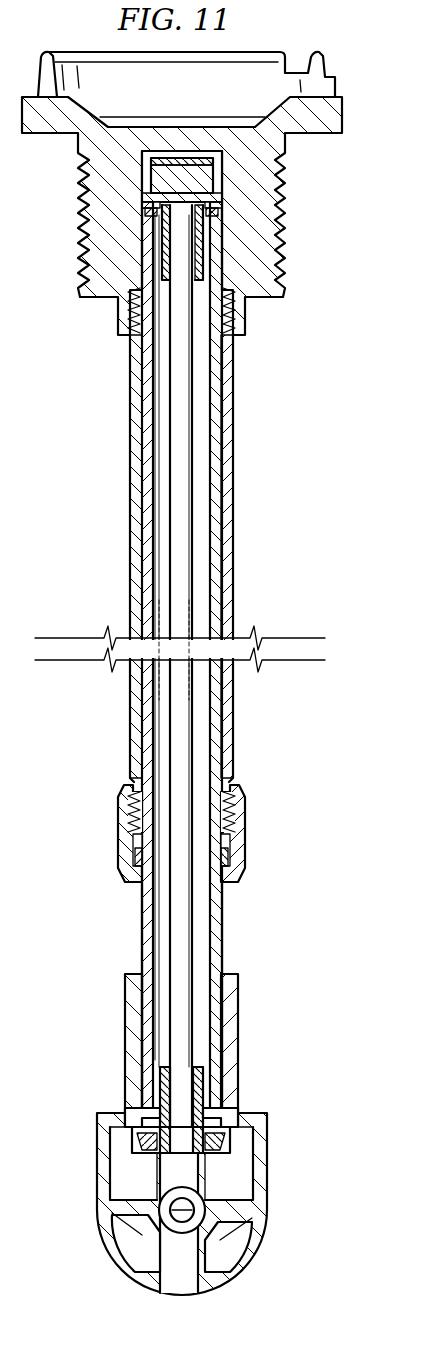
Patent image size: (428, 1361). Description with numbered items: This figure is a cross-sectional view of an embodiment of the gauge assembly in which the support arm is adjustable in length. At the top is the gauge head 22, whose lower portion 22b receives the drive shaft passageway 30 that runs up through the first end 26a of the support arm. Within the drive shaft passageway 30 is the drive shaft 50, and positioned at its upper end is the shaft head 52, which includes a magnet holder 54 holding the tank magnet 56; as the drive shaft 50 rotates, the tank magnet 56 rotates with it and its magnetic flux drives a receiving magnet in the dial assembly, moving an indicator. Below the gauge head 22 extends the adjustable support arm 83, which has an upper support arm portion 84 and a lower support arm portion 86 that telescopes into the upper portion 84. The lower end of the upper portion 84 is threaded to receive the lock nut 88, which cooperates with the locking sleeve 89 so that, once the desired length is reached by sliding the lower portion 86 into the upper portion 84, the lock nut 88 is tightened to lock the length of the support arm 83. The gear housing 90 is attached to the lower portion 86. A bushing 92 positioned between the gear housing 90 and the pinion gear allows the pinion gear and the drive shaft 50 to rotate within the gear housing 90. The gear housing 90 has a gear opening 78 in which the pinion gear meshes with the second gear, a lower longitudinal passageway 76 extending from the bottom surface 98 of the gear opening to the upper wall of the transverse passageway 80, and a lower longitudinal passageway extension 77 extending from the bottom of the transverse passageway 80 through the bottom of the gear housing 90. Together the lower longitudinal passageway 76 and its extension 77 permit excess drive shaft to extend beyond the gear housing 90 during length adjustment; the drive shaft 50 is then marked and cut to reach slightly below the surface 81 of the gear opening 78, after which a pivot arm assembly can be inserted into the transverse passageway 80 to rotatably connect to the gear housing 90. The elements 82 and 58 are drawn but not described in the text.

The gauge head 22 is at (373, 95).
The lower portion of gauge head 22b is at (96, 293).
The first end of support arm 26a is at (222, 262).
The shaft head 52 is at (215, 190).
The magnet holder 54 is at (185, 158).
The tank magnet 56 is at (150, 175).
The flange 82 is at (212, 216).
The ferrule 58 is at (178, 282).
The drive shaft passageway 30 is at (216, 438).
The upper support arm portion 84 is at (130, 578).
The drive shaft 50 is at (168, 518).
The adjustable support arm 83 is at (258, 580).
The lock nut 88 is at (246, 822).
The locking sleeve 89 is at (230, 852).
The lower support arm portion 86 is at (224, 918).
The gear housing 90 is at (262, 1050).
The surface of gear opening 81 is at (182, 1173).
The lower longitudinal passageway extension 77 is at (174, 1282).
The transverse passageway 80 is at (160, 1216).
The lower longitudinal passageway 76 is at (266, 1208).
The gear opening 78 is at (237, 1142).
The bushing 92 is at (226, 1118).
The bottom surface of gear opening 98 is at (127, 1123).